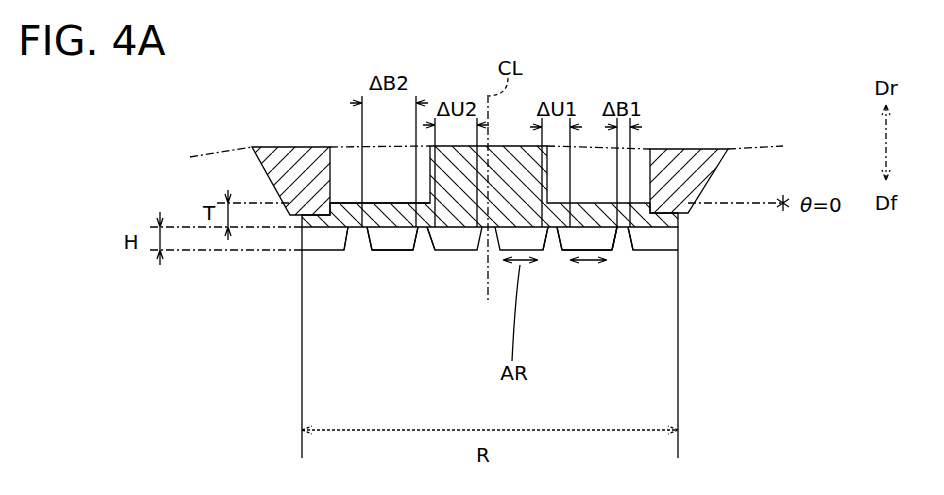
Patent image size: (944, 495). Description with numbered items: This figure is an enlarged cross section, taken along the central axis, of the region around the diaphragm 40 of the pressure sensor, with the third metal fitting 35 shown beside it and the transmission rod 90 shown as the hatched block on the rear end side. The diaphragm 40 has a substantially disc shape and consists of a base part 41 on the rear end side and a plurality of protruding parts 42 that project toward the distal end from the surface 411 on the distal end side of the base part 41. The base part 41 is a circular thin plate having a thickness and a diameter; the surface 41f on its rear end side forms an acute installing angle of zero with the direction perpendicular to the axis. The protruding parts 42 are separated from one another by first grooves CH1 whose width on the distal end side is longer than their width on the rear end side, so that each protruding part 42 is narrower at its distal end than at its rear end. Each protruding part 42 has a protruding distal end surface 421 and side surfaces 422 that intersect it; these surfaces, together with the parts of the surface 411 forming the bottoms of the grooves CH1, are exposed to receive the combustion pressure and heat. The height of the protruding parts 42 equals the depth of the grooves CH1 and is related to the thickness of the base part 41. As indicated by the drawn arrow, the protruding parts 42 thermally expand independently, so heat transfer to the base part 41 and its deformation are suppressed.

The surface on the rear end side of the base part 41f is at (343, 200).
The transmission rod 90 is at (508, 148).
The third metal fitting 35 is at (698, 176).
The diaphragm 40 is at (618, 354).
The side surface 422 is at (360, 248).
The protruding distal end surface 421 is at (388, 253).
The base part 41 is at (555, 246).
The protruding part 42 is at (590, 246).
The surface on the distal end side of the base part 411 is at (623, 246).
The first groove CH1 is at (621, 252).